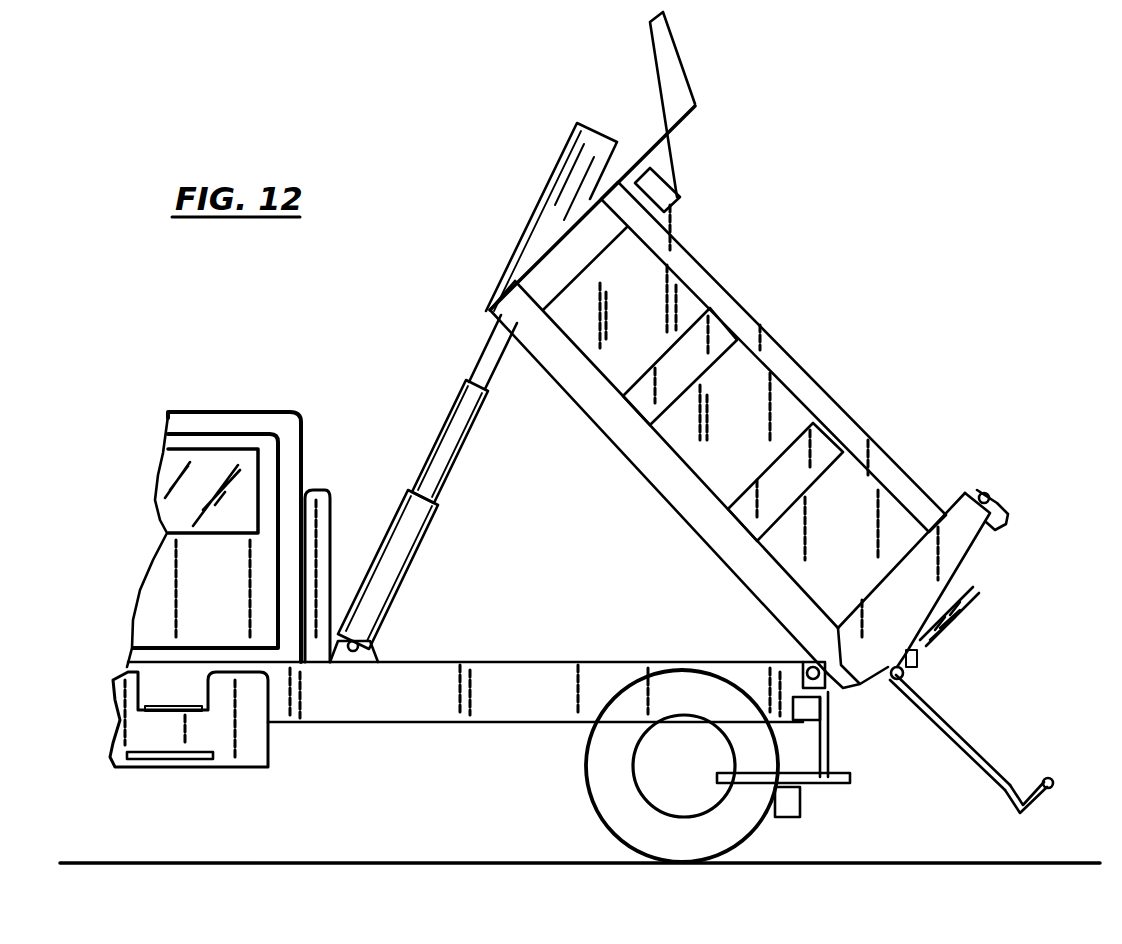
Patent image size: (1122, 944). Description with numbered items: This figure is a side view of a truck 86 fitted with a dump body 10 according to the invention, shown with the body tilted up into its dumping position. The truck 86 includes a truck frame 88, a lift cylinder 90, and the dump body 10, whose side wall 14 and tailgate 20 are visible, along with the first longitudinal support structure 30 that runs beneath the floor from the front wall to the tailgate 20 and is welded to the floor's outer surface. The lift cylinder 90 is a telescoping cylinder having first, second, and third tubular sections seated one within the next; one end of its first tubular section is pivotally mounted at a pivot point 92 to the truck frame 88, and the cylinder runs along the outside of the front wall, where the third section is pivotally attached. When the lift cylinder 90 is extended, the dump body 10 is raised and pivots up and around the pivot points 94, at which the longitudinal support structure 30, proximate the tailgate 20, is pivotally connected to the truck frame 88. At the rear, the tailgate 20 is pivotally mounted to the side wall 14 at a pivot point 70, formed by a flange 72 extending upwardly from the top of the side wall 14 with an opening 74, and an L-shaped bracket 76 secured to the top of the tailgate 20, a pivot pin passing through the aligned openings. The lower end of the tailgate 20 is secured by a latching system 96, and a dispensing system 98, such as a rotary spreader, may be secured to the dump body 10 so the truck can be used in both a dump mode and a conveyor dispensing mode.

The dump body 10 is at (752, 277).
The side wall 14 is at (750, 440).
The tailgate 20 is at (985, 572).
The first longitudinal support structure 30 is at (628, 448).
The pivot point 70 is at (970, 474).
The flange 72 is at (1003, 518).
The opening 74 is at (988, 493).
The L-shaped bracket 76 is at (1010, 535).
The truck 86 is at (230, 607).
The truck frame 88 is at (352, 709).
The lift cylinder 90 is at (540, 213).
The pivot point 92 is at (385, 637).
The pivot point 94 is at (800, 663).
The latching system 96 is at (912, 680).
The dispensing system 98 is at (842, 760).